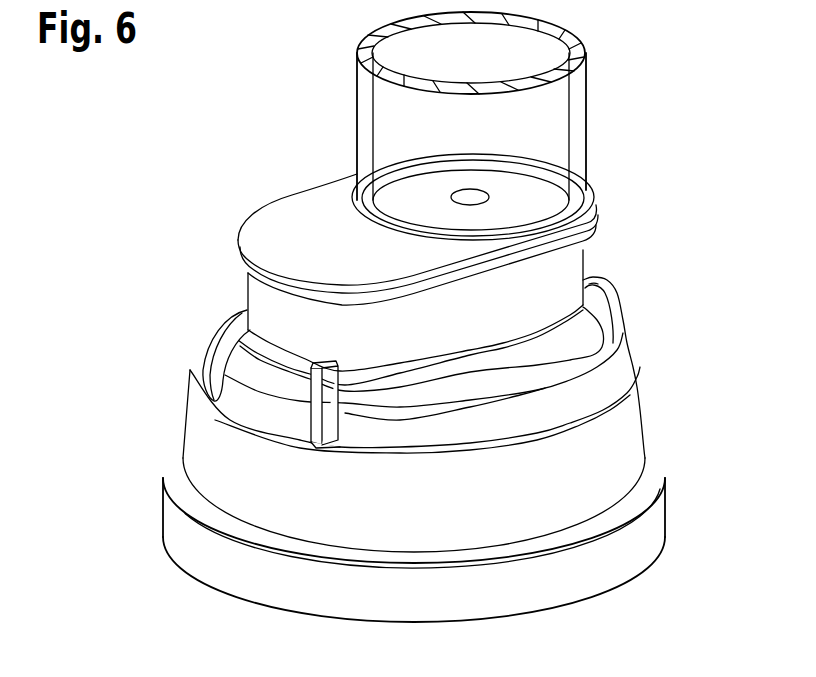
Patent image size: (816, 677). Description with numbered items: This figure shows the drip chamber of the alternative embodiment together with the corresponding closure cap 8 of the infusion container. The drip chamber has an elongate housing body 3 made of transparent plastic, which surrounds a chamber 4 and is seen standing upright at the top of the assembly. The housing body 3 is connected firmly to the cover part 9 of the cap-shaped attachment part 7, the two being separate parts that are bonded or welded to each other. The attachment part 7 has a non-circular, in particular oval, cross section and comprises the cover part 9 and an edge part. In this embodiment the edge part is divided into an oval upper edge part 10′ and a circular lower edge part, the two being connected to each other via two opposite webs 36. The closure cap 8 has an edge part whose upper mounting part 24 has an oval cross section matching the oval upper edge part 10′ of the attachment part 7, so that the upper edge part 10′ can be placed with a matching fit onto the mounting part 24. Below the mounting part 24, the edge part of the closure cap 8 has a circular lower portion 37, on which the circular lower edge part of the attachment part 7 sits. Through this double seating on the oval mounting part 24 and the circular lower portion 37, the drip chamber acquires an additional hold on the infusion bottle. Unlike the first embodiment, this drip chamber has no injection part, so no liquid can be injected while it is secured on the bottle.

The housing body 3 is at (585, 100).
The chamber 4 is at (380, 120).
The cap-shaped attachment part 7 is at (597, 202).
The closure cap 8 is at (188, 565).
The cover part 9 is at (283, 212).
The oval upper edge part 10′ is at (268, 305).
The upper mounting part 24 is at (520, 333).
The webs 36 is at (242, 382).
The circular lower portion 37 is at (583, 398).